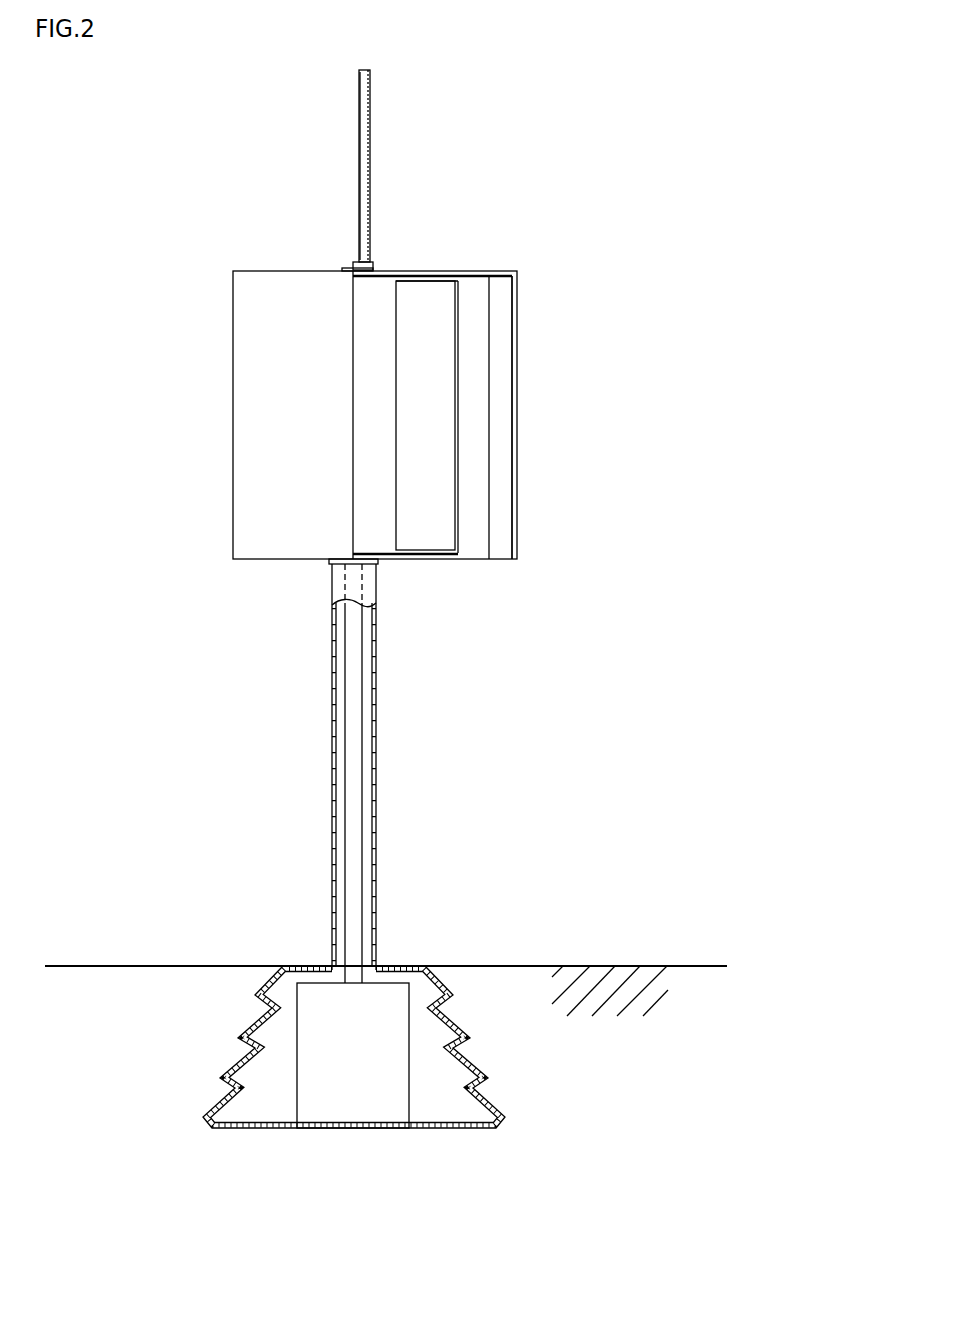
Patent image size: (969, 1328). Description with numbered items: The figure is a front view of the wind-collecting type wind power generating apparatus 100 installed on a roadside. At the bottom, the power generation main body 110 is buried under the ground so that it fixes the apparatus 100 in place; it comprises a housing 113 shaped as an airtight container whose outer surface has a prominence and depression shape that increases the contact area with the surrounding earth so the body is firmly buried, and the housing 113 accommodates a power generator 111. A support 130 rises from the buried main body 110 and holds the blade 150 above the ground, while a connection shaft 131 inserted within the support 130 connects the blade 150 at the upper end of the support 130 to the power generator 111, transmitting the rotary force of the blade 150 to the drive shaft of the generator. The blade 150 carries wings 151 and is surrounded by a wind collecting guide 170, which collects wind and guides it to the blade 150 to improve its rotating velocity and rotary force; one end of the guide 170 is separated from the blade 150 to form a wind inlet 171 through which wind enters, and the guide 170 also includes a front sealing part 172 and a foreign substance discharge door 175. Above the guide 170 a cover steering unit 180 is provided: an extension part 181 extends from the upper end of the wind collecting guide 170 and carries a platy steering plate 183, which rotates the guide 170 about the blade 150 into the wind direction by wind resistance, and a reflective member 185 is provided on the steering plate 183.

The wind-collecting type wind power generating apparatus 100 is at (200, 183).
The power generation main body 110 is at (321, 1023).
The power generator 111 is at (310, 1083).
The housing 113 is at (263, 985).
The support 130 is at (398, 771).
The connection shaft 131 is at (355, 748).
The blade 150 is at (432, 537).
The wings 151 is at (375, 496).
The wind collecting guide 170 is at (379, 444).
The wind inlet 171 is at (485, 375).
The front sealing part 172 is at (271, 486).
The foreign substance discharge door 175 is at (478, 430).
The cover steering unit 180 is at (353, 170).
The extension part 181 is at (373, 263).
The steering plate 183 is at (362, 166).
The reflective member 185 is at (370, 118).